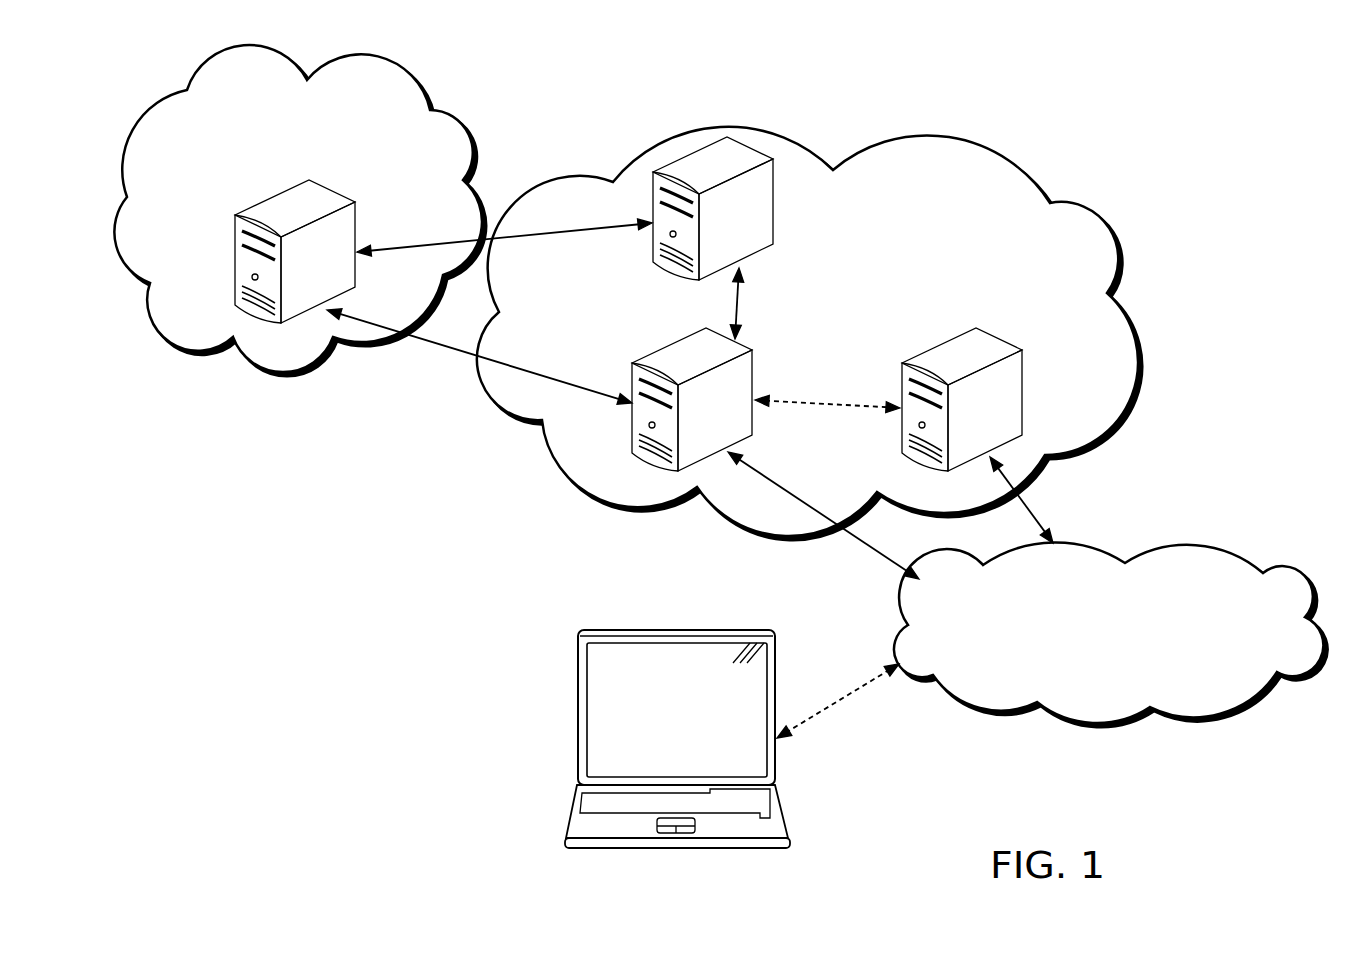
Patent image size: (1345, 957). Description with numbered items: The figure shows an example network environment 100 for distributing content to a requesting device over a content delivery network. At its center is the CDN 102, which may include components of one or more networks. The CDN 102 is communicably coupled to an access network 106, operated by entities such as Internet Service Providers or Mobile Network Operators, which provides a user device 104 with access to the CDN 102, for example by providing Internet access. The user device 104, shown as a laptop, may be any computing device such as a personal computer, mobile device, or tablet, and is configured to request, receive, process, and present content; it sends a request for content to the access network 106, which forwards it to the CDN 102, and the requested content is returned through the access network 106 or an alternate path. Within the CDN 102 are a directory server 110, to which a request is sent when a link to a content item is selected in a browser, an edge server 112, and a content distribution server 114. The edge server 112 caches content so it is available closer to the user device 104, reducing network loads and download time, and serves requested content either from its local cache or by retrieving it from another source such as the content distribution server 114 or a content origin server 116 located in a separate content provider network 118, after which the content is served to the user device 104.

The network environment 100 is at (720, 446).
The content delivery network (CDN) 102 is at (912, 273).
The user device 104 is at (777, 763).
The access network 106 is at (1089, 654).
The directory server 110 is at (1027, 377).
The edge server 112 is at (665, 348).
The content distribution server 114 is at (806, 170).
The content origin server 116 is at (235, 262).
The content provider network 118 is at (277, 154).